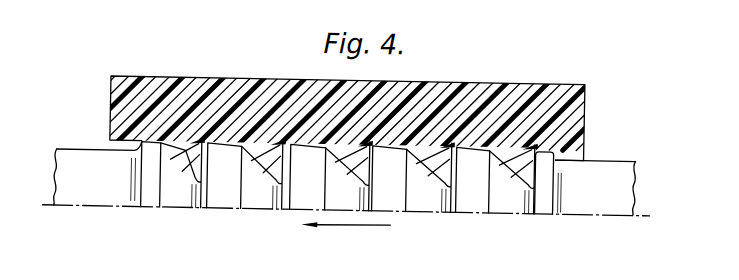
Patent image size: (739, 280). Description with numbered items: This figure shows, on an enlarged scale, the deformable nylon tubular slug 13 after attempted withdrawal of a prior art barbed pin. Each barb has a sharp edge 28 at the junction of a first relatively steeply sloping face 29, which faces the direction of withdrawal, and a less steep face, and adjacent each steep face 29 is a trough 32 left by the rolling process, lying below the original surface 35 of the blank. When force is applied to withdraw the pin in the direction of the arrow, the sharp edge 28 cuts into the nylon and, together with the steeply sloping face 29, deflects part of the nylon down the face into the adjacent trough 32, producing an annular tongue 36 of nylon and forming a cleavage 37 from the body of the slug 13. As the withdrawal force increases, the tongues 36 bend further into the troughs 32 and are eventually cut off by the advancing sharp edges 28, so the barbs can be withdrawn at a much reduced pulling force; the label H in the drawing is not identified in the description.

The tubular slug 13 is at (575, 102).
The sharp edge 28 is at (368, 136).
The first relatively steeply sloping face 29 is at (370, 153).
The trough 32 is at (364, 156).
The surface of the blank 35 is at (598, 151).
The annular tongue 36 is at (356, 146).
The cleavage 37 is at (365, 142).
The direction of travel H is at (590, 182).